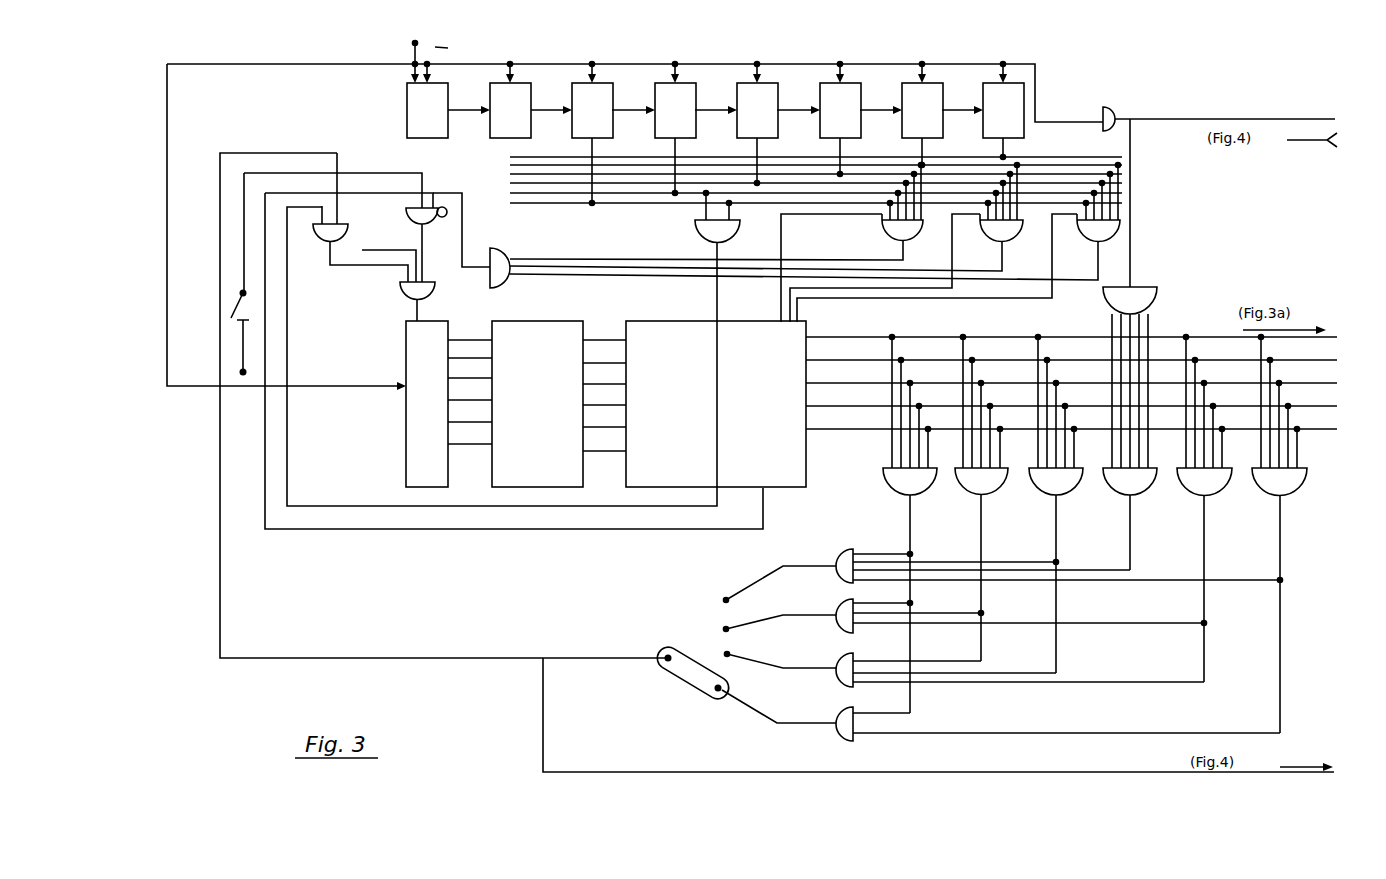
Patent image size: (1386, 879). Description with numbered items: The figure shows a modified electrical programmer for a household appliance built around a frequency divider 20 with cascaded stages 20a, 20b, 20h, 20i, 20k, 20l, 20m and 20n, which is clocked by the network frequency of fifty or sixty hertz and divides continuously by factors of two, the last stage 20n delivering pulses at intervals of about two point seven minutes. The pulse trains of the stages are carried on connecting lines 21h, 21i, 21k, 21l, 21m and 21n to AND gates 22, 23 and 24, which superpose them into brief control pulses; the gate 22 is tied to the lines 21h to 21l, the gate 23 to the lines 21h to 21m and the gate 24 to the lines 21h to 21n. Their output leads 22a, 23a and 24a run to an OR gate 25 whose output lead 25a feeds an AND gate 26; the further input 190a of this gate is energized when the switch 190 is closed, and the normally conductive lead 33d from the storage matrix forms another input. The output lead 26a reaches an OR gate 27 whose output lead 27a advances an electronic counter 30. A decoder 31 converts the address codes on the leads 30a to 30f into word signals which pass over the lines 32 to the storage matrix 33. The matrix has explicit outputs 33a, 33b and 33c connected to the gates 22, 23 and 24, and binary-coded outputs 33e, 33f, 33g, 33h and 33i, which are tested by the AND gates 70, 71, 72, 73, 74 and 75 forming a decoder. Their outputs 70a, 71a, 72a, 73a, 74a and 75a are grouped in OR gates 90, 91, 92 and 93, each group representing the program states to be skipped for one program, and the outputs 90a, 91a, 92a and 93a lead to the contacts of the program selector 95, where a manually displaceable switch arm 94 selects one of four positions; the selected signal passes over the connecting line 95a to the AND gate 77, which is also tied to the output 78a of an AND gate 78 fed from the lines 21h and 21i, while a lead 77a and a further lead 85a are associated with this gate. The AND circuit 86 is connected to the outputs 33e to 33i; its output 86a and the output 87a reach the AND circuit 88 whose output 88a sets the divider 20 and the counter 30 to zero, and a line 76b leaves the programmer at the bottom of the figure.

The output of AND circuit 88 88a is at (646, 63).
The frequency divider 20 is at (818, 77).
The divider stage 20a is at (440, 109).
The divider stage 20b is at (523, 109).
The divider stage 20h is at (605, 109).
The divider stage 20i is at (688, 109).
The divider stage 20k is at (770, 109).
The divider stage 20l is at (853, 109).
The divider stage 20m is at (937, 109).
The divider stage 20n is at (1016, 109).
The connecting line 21h is at (613, 200).
The connecting line 21i is at (692, 192).
The connecting line 21k is at (775, 182).
The connecting line 21l is at (858, 173).
The connecting line 21m is at (953, 164).
The connecting line 21n is at (1050, 158).
The AND circuit 88 is at (1113, 105).
The output of AND circuit 87 87a is at (1250, 118).
The output of AND circuit 86 86a is at (1133, 250).
The AND circuit 86 is at (1160, 293).
The storage matrix output 33e is at (877, 338).
The storage matrix output 33f is at (877, 361).
The storage matrix output 33g is at (877, 384).
The storage matrix output 33h is at (877, 407).
The storage matrix output 33i is at (877, 430).
The AND gate 70 is at (884, 490).
The AND gate 71 is at (960, 491).
The AND gate 72 is at (1038, 495).
The AND gate 73 is at (1112, 495).
The AND gate 74 is at (1188, 495).
The AND gate 75 is at (1261, 493).
The output of AND gate 70 70a is at (907, 537).
The output of AND gate 71 71a is at (978, 541).
The output of AND gate 72 72a is at (1052, 541).
The output of AND gate 73 73a is at (1126, 541).
The output of AND gate 74 74a is at (1200, 541).
The output of AND gate 75 75a is at (1274, 541).
The program selector 95 is at (648, 611).
The OR gate 90 is at (845, 551).
The OR gate 91 is at (845, 602).
The OR gate 92 is at (845, 654).
The OR gate 93 is at (845, 709).
The output of OR stage 90 90a is at (753, 581).
The output of OR stage 91 91a is at (770, 614).
The output of OR stage 92 92a is at (773, 666).
The output of OR stage 93 93a is at (750, 710).
The switch arm 94 is at (677, 676).
The connecting line 95a is at (217, 283).
The output line to Fig. 4 76b is at (1056, 771).
The input of AND gate 26 190a is at (394, 172).
The switch 190 is at (230, 305).
The explicit output lead 33d is at (323, 191).
The output lead of OR gate 25 25a is at (465, 196).
The AND gate 26 is at (428, 225).
The output lead of AND gate 26 26a is at (424, 266).
The AND gate 77 is at (348, 231).
The gate output line 77a is at (353, 268).
The input line 85a is at (389, 257).
The OR gate 27 is at (402, 292).
The output lead of OR gate 27 27a is at (420, 308).
The electronic counter 30 is at (418, 407).
The address lead 30a is at (470, 331).
The address lead 30f is at (470, 459).
The decoder 31 is at (538, 490).
The lines 32 is at (603, 337).
The storage matrix 33 is at (684, 367).
The explicit output 33a is at (800, 308).
The explicit output 33b is at (778, 316).
The explicit output 33c is at (788, 326).
The AND gate 78 is at (696, 230).
The output of AND gate 78 78a is at (719, 313).
The AND gate 23 is at (888, 240).
The output lead of AND gate 23 23a is at (760, 262).
The AND gate 24 is at (1015, 242).
The output lead of AND gate 24 24a is at (615, 265).
The AND gate 22 is at (1105, 242).
The output lead of AND gate 22 22a is at (565, 273).
The OR gate 25 is at (512, 257).